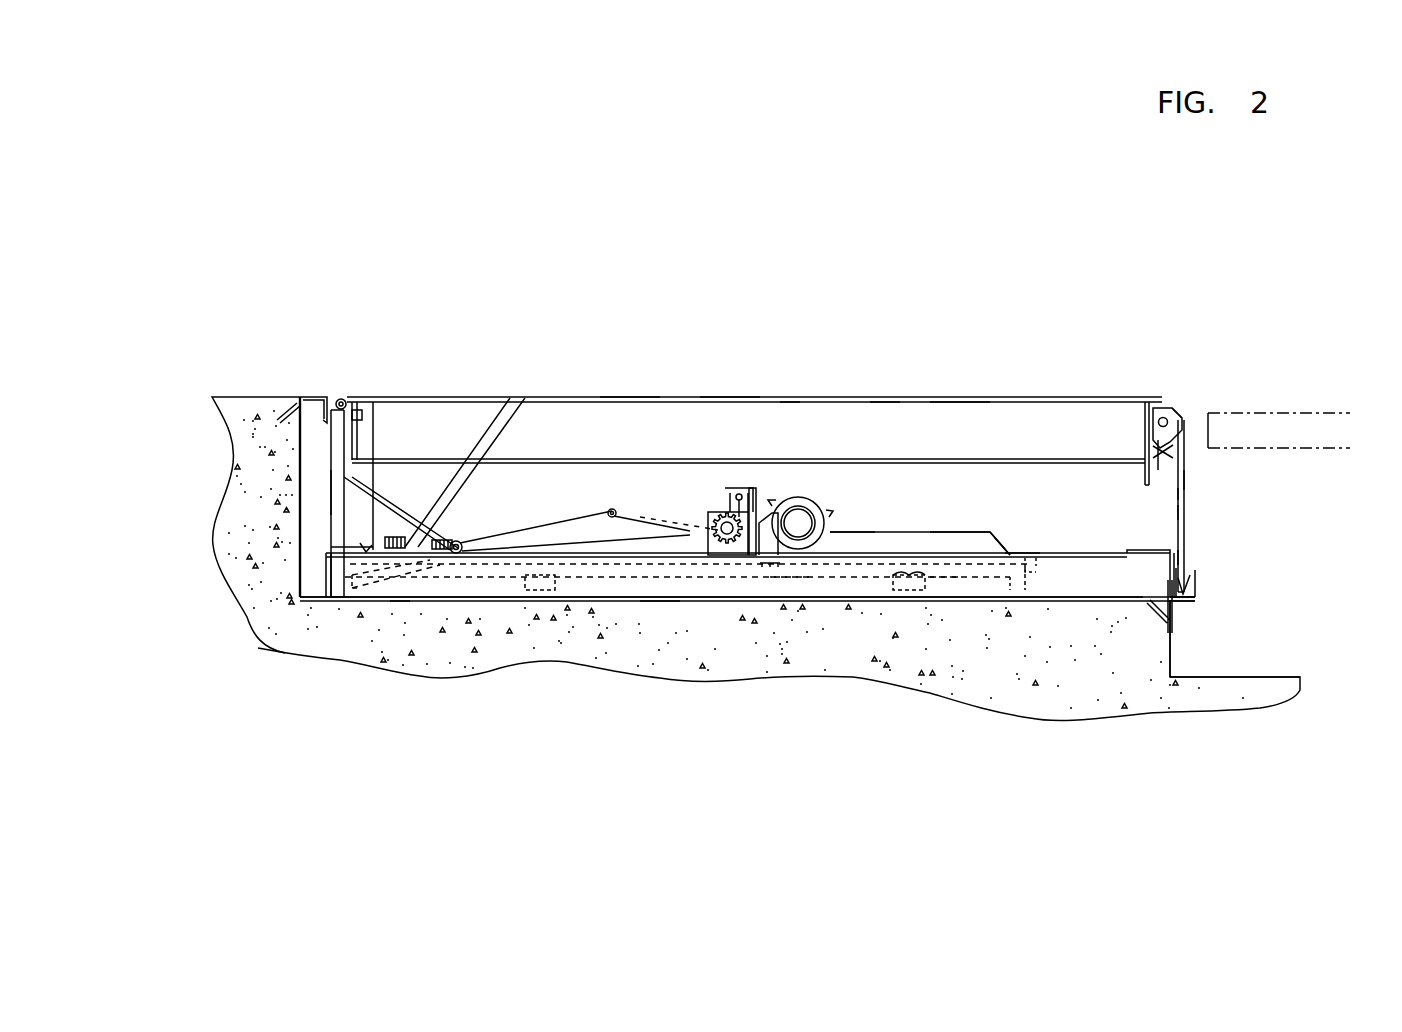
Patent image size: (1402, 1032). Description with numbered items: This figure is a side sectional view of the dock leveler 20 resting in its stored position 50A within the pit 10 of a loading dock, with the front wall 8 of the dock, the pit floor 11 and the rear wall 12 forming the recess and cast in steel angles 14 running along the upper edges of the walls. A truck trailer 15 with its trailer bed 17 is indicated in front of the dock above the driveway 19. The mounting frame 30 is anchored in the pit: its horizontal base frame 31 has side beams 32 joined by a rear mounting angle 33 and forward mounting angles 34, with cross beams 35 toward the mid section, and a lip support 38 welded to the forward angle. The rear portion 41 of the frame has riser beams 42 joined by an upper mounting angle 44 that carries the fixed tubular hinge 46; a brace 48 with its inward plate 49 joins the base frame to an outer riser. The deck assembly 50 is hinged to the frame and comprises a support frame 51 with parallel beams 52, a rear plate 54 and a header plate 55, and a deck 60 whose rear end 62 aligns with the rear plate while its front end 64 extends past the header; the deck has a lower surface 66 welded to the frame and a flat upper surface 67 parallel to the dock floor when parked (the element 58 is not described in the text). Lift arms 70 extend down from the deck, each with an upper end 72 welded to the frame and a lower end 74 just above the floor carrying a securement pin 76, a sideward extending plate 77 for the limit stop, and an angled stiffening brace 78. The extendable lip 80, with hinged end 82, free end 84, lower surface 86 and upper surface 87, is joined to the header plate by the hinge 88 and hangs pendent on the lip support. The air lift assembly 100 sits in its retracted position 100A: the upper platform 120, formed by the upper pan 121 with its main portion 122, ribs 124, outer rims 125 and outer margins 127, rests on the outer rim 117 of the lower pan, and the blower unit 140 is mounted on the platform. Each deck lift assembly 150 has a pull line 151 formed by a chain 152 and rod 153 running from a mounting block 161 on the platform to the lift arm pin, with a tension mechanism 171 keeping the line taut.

The front wall 8 is at (1172, 652).
The pit 10 is at (603, 600).
The pit floor 11 is at (660, 597).
The rear wall 12 is at (300, 440).
The cast in steel angle 14 is at (283, 397).
The truck trailer 15 is at (1320, 412).
The trailer bed 17 is at (1288, 412).
The driveway 19 is at (1275, 677).
The dock leveler 20 is at (636, 376).
The mounting frame 30 is at (745, 598).
The base frame 31 is at (790, 587).
The side beams 32 is at (943, 587).
The rear mounting angle 33 is at (338, 598).
The forward mounting angle 34 is at (1157, 593).
The cross beams 35 is at (525, 588).
The lip support 38 is at (1190, 600).
The rear portion 41 is at (332, 503).
The riser beams 42 is at (332, 482).
The upper mounting angle 44 is at (313, 397).
The hinge 46 is at (342, 400).
The brace 48 is at (383, 502).
The plate 49 is at (410, 535).
The deck assembly 50 is at (762, 397).
The stored position 50A is at (788, 397).
The support frame 51 is at (731, 404).
The beams 52 is at (750, 446).
The rear plate 54 is at (368, 410).
The header plate 55 is at (1143, 402).
The front member lower end 58 is at (1158, 470).
The deck 60 is at (883, 397).
The rear end 62 is at (353, 397).
The front end 64 is at (1160, 403).
The lower surface 66 is at (943, 397).
The upper surface 67 is at (977, 397).
The lift arm 70 is at (362, 445).
The upper end 72 is at (358, 415).
The lower end 74 is at (400, 600).
The securement pin 76 is at (350, 578).
The sideward extending plate 77 is at (365, 548).
The stiffening brace 78 is at (455, 470).
The extendable lip 80 is at (1187, 478).
The hinged end 82 is at (1190, 407).
The free end 84 is at (1185, 558).
The lower surface 86 is at (1185, 492).
The upper surface 87 is at (1185, 512).
The hinge 88 is at (1180, 492).
The air lift assembly 100 is at (968, 532).
The retracted position 100A is at (985, 532).
The outer rim 117 is at (1033, 580).
The upper platform 120 is at (920, 531).
The upper pan 121 is at (870, 543).
The main portion 122 is at (945, 532).
The ribs 124 is at (1020, 531).
The outer rims 125 is at (1018, 555).
The outer margins 127 is at (1036, 570).
The blower unit 140 is at (812, 495).
The deck lift assembly 150 is at (714, 512).
The pull line 151 is at (612, 511).
The chain 152 is at (655, 518).
The rod 153 is at (580, 516).
The mounting block 161 is at (775, 492).
The tension mechanism 171 is at (433, 530).